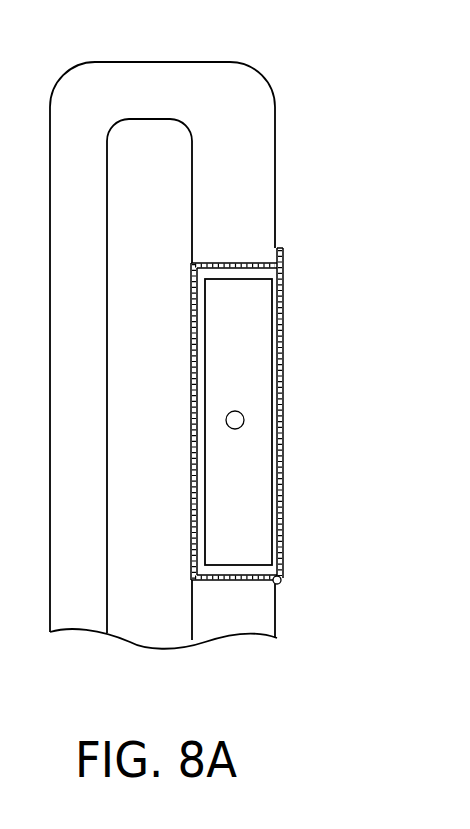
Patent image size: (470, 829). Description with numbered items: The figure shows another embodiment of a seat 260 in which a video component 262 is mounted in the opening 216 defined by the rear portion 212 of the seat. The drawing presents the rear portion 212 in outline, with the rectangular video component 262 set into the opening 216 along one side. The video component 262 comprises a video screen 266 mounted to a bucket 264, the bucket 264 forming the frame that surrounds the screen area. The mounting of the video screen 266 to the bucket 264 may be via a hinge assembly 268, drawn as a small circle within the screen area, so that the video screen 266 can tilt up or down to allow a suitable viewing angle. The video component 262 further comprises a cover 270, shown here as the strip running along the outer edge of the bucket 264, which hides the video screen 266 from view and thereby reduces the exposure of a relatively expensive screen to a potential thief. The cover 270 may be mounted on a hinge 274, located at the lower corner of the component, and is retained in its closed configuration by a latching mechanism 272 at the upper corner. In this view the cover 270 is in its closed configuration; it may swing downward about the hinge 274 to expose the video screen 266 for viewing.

The seat 260 is at (224, 360).
The rear portion 212 is at (287, 186).
The opening 216 is at (236, 598).
The video component 262 is at (262, 416).
The bucket 264 is at (222, 262).
The video screen 266 is at (228, 362).
The hinge assembly 268 is at (232, 424).
The cover 270 is at (284, 343).
The latching mechanism 272 is at (279, 247).
The hinge 274 is at (282, 584).